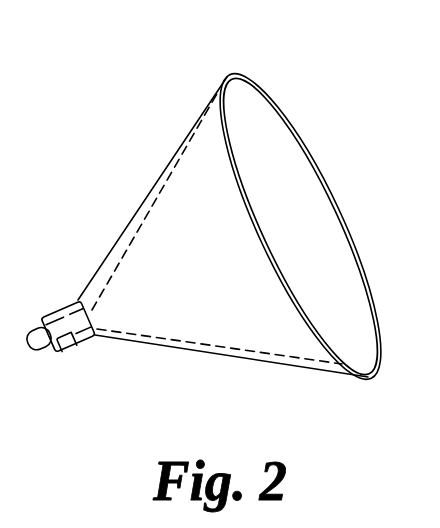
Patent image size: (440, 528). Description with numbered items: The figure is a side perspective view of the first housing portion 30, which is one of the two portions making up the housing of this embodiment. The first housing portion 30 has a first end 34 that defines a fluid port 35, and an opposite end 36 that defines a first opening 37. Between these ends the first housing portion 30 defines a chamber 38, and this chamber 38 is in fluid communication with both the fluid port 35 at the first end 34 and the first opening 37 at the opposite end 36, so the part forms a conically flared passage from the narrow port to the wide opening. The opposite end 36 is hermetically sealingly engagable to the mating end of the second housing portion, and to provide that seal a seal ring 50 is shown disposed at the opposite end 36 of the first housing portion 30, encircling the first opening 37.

The first housing portion 30 is at (90, 100).
The first end 34 is at (105, 277).
The fluid port 35 is at (75, 352).
The opposite end 36 is at (223, 86).
The first opening 37 is at (284, 157).
The chamber 38 is at (190, 310).
The seal ring 50 is at (249, 69).